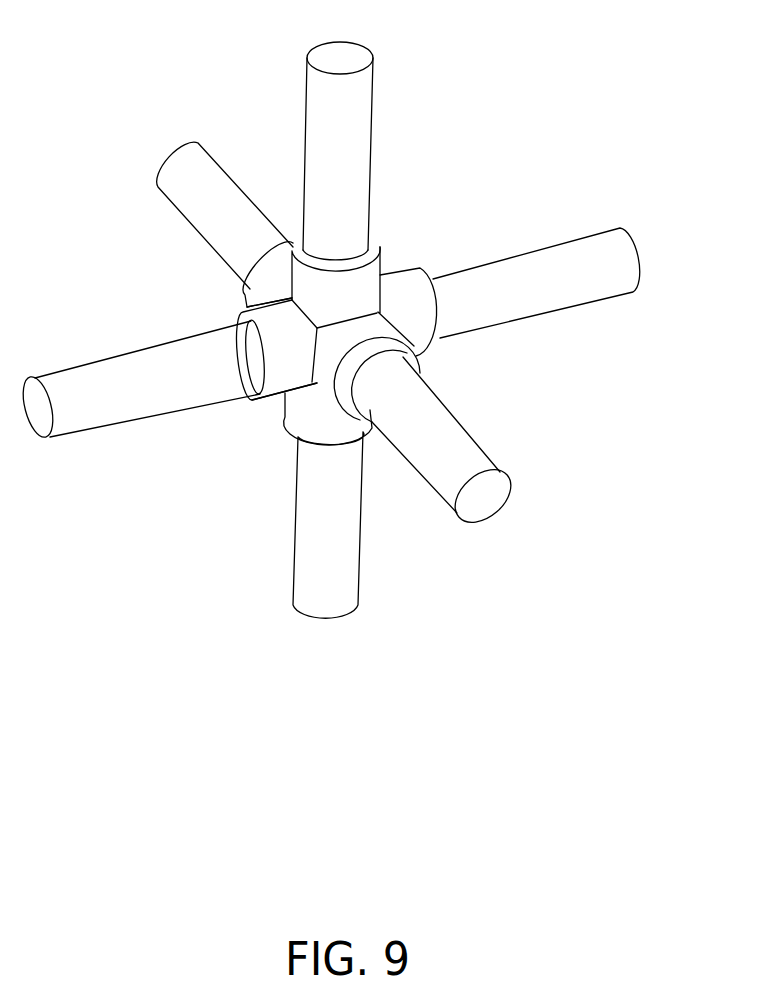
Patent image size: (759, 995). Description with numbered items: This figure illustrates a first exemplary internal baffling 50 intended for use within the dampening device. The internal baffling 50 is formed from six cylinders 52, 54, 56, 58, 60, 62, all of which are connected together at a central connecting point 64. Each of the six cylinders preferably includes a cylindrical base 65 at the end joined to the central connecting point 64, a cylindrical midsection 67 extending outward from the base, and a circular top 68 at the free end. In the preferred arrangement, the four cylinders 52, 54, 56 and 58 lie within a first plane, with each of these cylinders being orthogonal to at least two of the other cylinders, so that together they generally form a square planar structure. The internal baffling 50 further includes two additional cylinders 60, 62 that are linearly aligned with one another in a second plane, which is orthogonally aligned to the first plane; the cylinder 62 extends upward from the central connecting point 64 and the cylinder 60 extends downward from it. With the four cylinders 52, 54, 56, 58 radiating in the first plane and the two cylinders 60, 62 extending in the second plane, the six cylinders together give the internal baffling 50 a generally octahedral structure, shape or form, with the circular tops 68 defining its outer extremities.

The internal baffling 50 is at (200, 45).
The cylinder 52 is at (53, 420).
The cylinder 54 is at (447, 495).
The cylinder 56 is at (615, 240).
The cylinder 58 is at (172, 178).
The cylinder 60 is at (337, 493).
The cylinder 62 is at (343, 88).
The central connecting point 64 is at (368, 310).
The cylindrical base 65 is at (303, 272).
The cylindrical midsection 67 is at (332, 122).
The circular top 68 is at (347, 50).